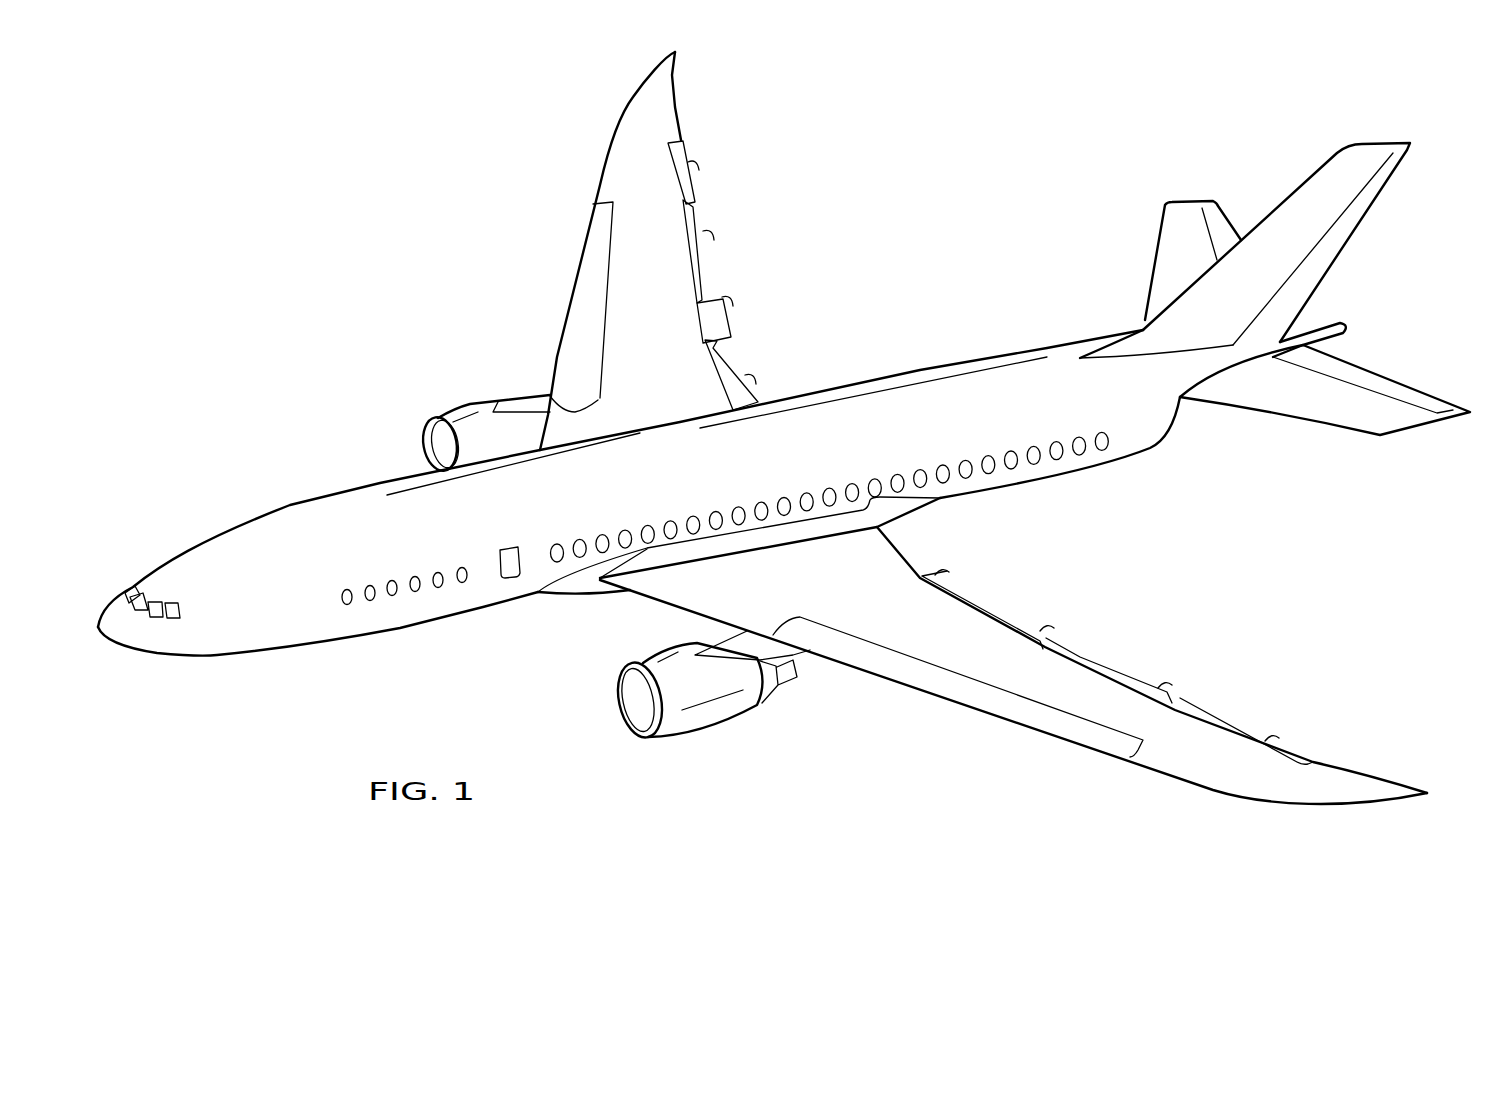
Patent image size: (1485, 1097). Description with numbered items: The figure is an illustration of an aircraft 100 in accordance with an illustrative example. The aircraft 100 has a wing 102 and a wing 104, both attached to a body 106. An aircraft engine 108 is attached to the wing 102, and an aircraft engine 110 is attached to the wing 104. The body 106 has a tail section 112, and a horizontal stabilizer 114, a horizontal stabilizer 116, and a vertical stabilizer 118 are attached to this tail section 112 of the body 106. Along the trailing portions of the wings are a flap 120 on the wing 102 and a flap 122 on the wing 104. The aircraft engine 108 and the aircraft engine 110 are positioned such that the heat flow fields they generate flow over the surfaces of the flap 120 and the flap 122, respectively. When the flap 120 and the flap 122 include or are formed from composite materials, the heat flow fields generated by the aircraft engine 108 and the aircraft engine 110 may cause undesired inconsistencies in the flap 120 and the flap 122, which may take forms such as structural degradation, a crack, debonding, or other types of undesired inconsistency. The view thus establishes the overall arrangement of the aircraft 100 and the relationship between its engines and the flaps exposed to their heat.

The aircraft 100 is at (386, 190).
The wing 102 is at (673, 87).
The wing 104 is at (1267, 805).
The body 106 is at (237, 522).
The aircraft engine 108 is at (467, 398).
The aircraft engine 110 is at (710, 728).
The tail section 112 is at (1220, 468).
The horizontal stabilizer 114 is at (1157, 262).
The horizontal stabilizer 116 is at (1327, 427).
The vertical stabilizer 118 is at (1355, 230).
The flap 120 is at (742, 362).
The flap 122 is at (965, 582).